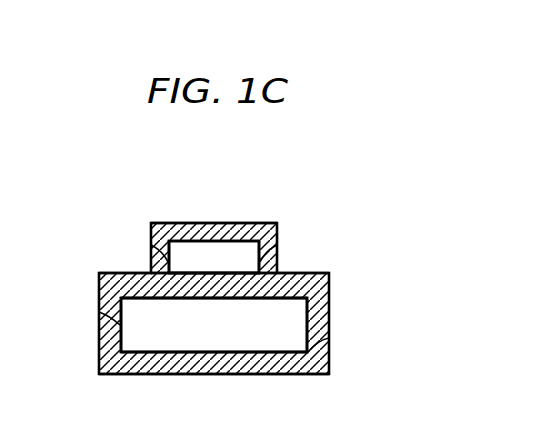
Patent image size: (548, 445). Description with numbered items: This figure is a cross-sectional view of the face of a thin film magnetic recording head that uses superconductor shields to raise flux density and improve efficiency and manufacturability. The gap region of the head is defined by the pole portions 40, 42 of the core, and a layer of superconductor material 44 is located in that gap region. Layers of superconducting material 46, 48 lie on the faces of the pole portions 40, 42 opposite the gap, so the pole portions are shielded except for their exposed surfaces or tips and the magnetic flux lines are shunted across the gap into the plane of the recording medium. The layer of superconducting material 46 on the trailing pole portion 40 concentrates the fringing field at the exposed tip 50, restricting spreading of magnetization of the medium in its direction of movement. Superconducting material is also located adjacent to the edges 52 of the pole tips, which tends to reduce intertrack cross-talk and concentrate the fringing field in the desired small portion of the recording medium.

The pole portion 40 is at (233, 243).
The pole portion 42 is at (267, 315).
The layer of superconductor material 44 is at (228, 282).
The layer of superconducting material 46 is at (177, 223).
The layer of superconducting material 48 is at (222, 362).
The exposed tip 50 is at (212, 245).
The edges of the pole tips 52 is at (168, 253).